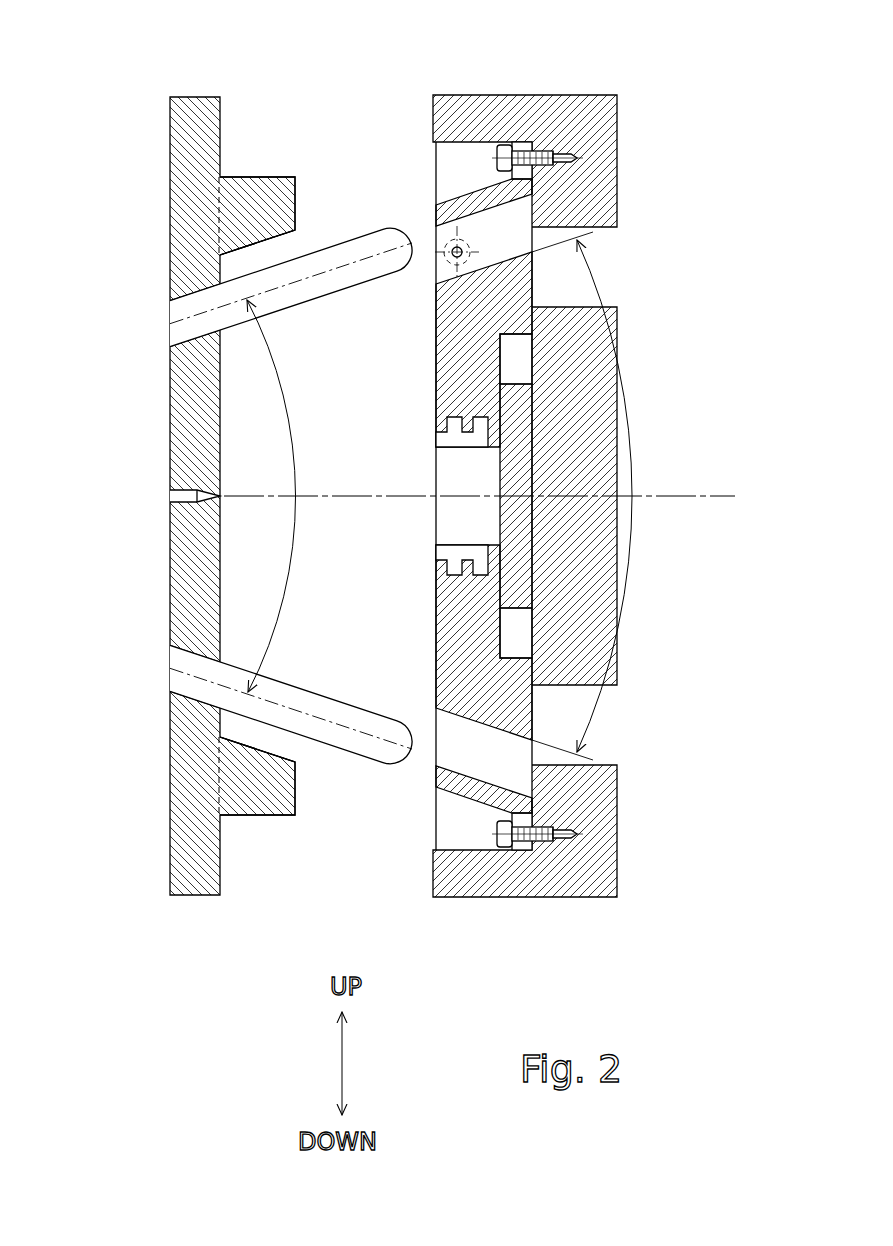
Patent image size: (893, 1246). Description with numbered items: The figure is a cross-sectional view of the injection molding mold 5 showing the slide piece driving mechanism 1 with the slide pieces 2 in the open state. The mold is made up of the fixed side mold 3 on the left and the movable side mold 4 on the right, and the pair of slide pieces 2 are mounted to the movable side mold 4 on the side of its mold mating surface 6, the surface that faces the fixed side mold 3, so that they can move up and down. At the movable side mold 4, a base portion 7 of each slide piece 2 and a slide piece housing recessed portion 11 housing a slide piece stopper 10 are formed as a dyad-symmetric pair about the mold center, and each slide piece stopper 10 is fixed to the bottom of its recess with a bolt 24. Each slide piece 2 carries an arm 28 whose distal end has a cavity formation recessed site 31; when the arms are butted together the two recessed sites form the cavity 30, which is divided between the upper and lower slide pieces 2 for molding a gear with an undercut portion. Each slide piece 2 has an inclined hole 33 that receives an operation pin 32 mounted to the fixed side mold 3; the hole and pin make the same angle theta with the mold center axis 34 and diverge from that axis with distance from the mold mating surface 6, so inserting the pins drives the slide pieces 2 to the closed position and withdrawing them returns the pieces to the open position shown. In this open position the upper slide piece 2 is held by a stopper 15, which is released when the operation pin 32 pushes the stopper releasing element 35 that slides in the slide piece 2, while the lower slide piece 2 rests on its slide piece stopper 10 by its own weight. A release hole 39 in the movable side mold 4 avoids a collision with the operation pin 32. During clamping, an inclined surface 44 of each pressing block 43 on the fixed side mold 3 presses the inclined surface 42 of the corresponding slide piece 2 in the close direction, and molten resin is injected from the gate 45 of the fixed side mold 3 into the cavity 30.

The slide piece driving mechanism 1 is at (357, 236).
The slide piece 2 is at (432, 387).
The fixed side mold 3 is at (222, 97).
The movable side mold 4 is at (590, 97).
The injection molding mold 5 is at (417, 450).
The mold mating surface 6 is at (433, 120).
The base portion 7 is at (532, 186).
The slide piece stopper 10 is at (517, 145).
The slide piece housing recessed portion 11 is at (523, 390).
The stopper 15 is at (418, 283).
The bolt 24 is at (560, 152).
The arm 28 is at (458, 553).
The cavity 30 is at (417, 534).
The cavity formation recessed site 31 is at (417, 534).
The operation pin 32 is at (317, 262).
The inclined hole 33 is at (495, 230).
The mold center axis 34 is at (262, 493).
The stopper releasing element 35 is at (449, 257).
The release hole 39 is at (625, 245).
The inclined surface 42 is at (497, 140).
The pressing block 43 is at (265, 178).
The inclined surface 44 is at (267, 267).
The gate 45 is at (205, 505).